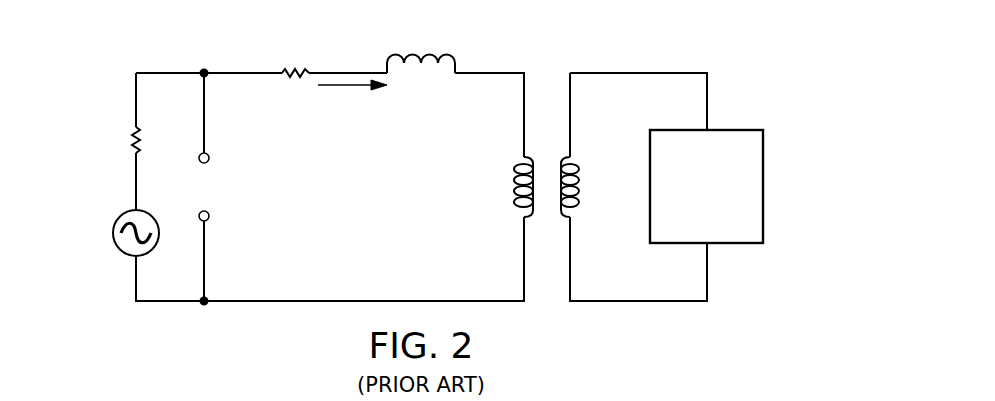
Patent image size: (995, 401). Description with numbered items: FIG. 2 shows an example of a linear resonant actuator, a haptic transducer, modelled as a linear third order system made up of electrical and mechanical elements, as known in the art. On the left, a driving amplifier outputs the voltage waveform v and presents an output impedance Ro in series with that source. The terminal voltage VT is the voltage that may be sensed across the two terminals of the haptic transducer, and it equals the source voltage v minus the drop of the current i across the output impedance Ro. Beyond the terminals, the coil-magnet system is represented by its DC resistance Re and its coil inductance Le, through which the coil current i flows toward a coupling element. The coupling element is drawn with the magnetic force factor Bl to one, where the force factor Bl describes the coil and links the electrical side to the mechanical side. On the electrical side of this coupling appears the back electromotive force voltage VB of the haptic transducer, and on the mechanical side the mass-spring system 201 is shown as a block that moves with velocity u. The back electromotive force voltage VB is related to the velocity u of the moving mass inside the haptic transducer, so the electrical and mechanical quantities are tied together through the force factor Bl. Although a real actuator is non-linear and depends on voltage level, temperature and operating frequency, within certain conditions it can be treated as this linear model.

The mass-spring system 201 is at (764, 186).
The output impedance Ro is at (118, 140).
The voltage waveform v is at (117, 233).
The terminal voltage VT is at (204, 187).
The DC resistance Re is at (295, 59).
The current i is at (352, 95).
The coil inductance Le is at (421, 51).
The back electromotive force voltage VB is at (495, 187).
The magnetic force factor Bl is at (549, 57).
The velocity u is at (589, 187).